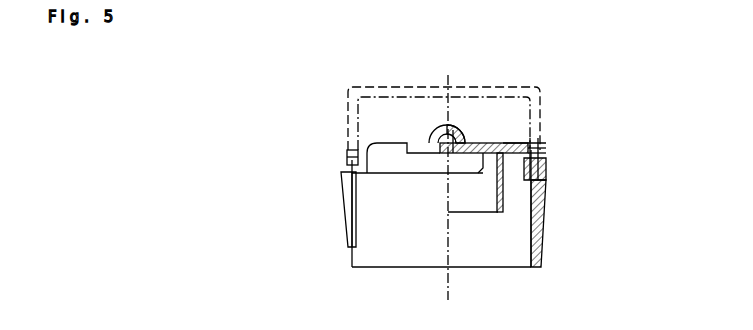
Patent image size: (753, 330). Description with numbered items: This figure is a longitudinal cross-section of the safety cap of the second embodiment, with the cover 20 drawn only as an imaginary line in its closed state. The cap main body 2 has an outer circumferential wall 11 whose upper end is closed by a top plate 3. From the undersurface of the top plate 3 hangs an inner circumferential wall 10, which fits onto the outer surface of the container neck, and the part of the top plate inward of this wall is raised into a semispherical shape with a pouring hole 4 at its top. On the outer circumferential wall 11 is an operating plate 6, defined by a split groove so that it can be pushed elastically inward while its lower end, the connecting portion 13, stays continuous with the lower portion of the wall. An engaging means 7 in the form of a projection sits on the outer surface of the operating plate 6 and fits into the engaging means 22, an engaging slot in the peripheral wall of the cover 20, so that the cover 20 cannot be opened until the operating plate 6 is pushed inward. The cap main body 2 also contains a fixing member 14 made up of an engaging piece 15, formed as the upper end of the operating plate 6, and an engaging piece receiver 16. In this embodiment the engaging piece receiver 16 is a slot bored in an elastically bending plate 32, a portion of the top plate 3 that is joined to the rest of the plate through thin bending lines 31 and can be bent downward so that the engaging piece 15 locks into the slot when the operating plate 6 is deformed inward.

The cap main body 2 is at (342, 255).
The top plate 3 is at (480, 143).
The pouring hole 4 is at (443, 124).
The operating plate 6 is at (344, 196).
The engaging means 7 is at (350, 157).
The inner circumferential wall 10 is at (508, 190).
The outer circumferential wall 11 is at (397, 238).
The connecting portion 13 is at (545, 245).
The fixing member 14 is at (626, 80).
The engaging piece 15 is at (540, 140).
The engaging piece receiver 16 is at (519, 138).
The cover 20 is at (338, 90).
The engaging means 22 is at (348, 162).
The bending line 31 is at (505, 141).
The elastically bending plate 32 is at (540, 148).